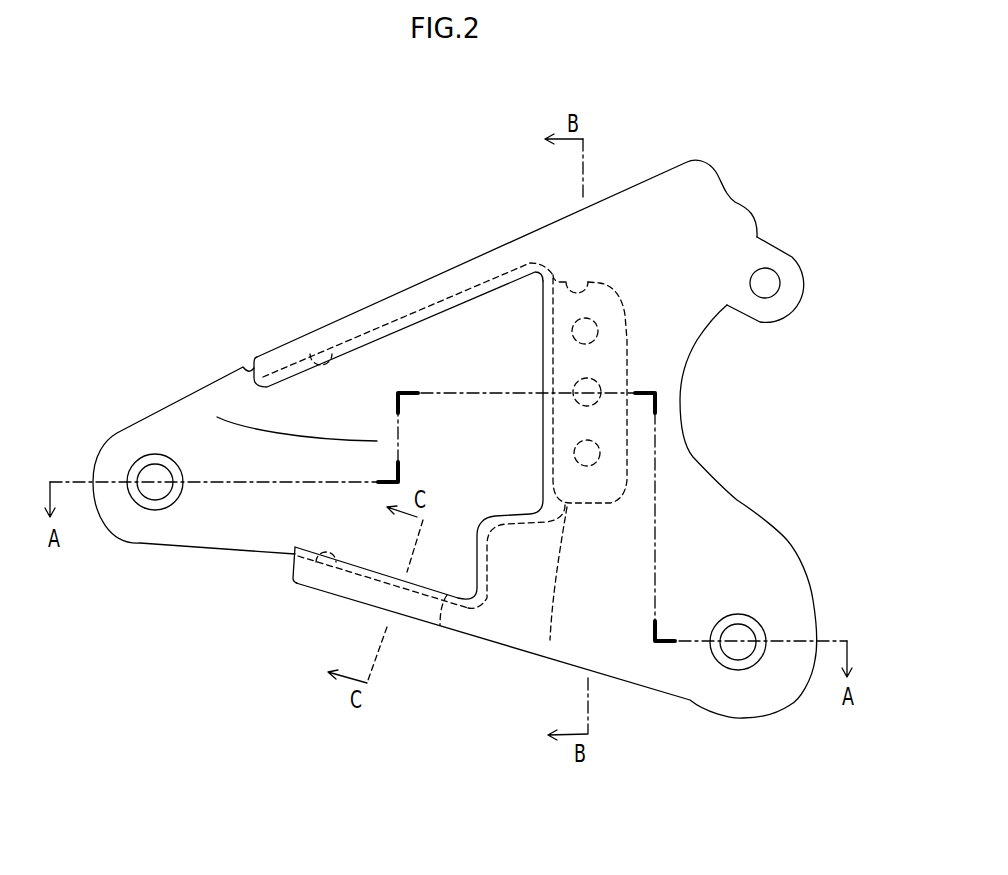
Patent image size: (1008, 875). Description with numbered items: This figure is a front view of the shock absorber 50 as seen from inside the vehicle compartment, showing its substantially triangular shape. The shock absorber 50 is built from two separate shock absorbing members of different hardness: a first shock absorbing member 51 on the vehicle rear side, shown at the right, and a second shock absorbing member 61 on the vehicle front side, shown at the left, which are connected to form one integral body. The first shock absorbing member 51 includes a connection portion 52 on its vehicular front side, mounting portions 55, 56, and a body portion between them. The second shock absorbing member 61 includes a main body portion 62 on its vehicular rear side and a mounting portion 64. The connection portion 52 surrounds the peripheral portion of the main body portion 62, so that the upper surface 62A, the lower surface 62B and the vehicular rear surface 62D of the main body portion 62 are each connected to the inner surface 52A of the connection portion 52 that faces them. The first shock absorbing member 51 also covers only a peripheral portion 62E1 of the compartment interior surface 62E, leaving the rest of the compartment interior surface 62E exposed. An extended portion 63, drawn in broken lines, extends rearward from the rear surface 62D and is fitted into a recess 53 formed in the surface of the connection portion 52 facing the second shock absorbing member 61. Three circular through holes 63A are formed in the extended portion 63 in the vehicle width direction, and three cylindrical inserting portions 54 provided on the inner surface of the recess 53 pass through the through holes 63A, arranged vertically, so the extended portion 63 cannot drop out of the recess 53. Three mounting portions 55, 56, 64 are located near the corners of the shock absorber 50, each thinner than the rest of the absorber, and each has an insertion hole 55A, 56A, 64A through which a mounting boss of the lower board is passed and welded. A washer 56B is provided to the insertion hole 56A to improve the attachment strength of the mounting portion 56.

The shock absorber 50 is at (455, 467).
The first shock absorbing member 51 is at (634, 703).
The connection portion 52 is at (386, 311).
The inner surface of connection portion 52A is at (313, 373).
The recess 53 is at (568, 287).
The inserting portions 54 is at (598, 391).
The mounting portion 55 is at (766, 255).
The insertion hole 55A is at (763, 295).
The mounting portion 56 is at (780, 560).
The insertion hole 56A is at (746, 627).
The washer 56B is at (727, 666).
The second shock absorbing member 61 is at (224, 563).
The main body portion 62 is at (357, 498).
The upper surface 62A is at (343, 350).
The lower surface 62B is at (350, 572).
The vehicular rear surface 62D is at (550, 640).
The compartment interior surface 62E is at (217, 417).
The peripheral portion of compartment interior surface 62E1 is at (440, 625).
The extended portion 63 is at (607, 295).
The through holes 63A is at (578, 385).
The mounting portion 64 is at (118, 503).
The insertion hole 64A is at (165, 492).